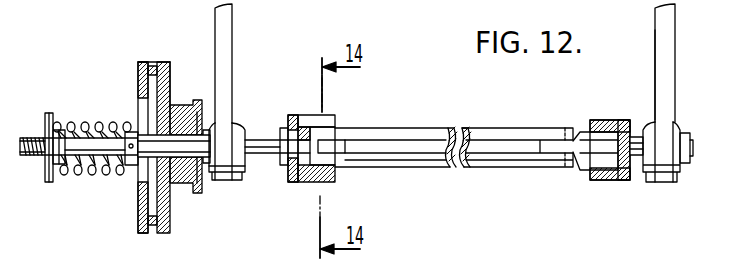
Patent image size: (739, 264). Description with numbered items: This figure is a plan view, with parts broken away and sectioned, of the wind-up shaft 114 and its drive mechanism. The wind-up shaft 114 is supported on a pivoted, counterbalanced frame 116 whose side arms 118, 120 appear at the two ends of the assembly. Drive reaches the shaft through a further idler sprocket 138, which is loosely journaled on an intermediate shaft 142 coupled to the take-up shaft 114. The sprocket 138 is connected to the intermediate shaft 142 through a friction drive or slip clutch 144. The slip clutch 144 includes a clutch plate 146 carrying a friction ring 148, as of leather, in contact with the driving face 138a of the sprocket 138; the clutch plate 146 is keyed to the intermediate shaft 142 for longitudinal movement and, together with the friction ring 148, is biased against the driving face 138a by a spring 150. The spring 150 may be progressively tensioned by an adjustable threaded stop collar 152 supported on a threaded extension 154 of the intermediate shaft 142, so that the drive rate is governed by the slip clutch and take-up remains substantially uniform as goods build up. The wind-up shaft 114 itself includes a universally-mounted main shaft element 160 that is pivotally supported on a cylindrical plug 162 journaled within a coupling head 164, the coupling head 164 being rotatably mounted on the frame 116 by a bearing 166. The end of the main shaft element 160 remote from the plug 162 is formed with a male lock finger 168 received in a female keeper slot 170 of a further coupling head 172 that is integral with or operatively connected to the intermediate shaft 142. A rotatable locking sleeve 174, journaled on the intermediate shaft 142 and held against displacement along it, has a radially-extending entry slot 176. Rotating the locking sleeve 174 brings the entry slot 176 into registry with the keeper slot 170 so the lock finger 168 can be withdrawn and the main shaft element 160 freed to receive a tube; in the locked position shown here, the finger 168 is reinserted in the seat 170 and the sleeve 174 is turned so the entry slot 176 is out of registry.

The wind-up shaft 114 is at (437, 134).
The frame 116 is at (672, 59).
The side arm 118 is at (675, 85).
The side arm 120 is at (230, 58).
The further idler sprocket 138 is at (180, 111).
The driving face 138a is at (171, 86).
The intermediate shaft 142 is at (265, 155).
The slip clutch 144 is at (151, 54).
The clutch plate 146 is at (142, 100).
The friction ring 148 is at (158, 65).
The spring 150 is at (90, 171).
The adjustable threaded stop collar 152 is at (48, 183).
The threaded extension 154 is at (33, 158).
The main shaft element 160 is at (489, 136).
The cylindrical plug 162 is at (583, 171).
The coupling head 164 is at (618, 181).
The bearing 166 is at (649, 178).
The male lock finger 168 is at (331, 148).
The female keeper slot 170 is at (327, 139).
The further coupling head 172 is at (318, 181).
The rotatable locking sleeve 174 is at (296, 183).
The entry slot 176 is at (326, 116).